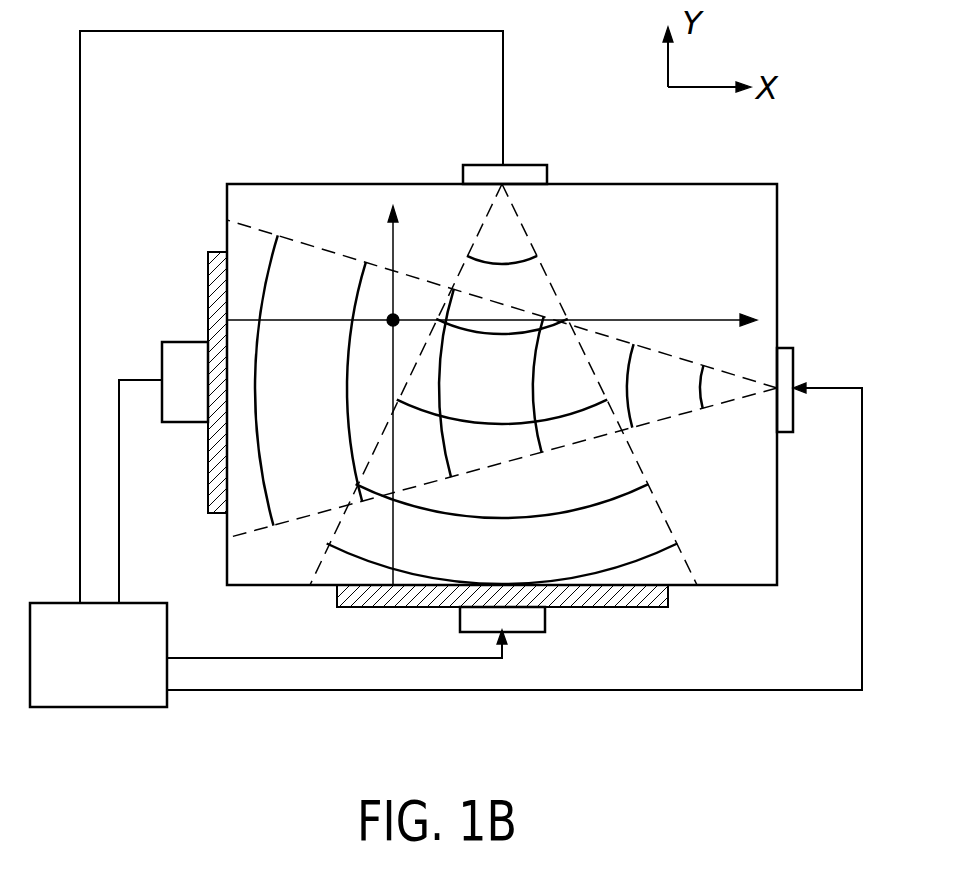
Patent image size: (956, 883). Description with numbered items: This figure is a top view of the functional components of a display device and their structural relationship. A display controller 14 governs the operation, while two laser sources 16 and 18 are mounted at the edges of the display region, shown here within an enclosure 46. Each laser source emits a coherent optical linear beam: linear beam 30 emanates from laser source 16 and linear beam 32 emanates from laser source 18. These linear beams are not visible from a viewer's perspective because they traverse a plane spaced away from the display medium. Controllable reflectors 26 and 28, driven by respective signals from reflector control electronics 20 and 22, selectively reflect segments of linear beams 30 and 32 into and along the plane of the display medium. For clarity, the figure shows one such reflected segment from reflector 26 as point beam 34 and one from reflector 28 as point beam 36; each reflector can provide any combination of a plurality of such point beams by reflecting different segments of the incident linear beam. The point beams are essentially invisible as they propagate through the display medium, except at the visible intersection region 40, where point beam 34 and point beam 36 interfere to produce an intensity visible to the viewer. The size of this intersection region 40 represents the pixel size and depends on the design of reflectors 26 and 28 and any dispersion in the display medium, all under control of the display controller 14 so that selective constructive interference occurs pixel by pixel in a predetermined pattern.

The display controller 14 is at (68, 656).
The laser source 16 is at (523, 165).
The laser source 18 is at (787, 348).
The reflector control electronics 20 is at (460, 624).
The reflector control electronics 22 is at (170, 399).
The controllable reflector 26 is at (603, 607).
The controllable reflector 28 is at (208, 291).
The linear beam 30 is at (676, 529).
The linear beam 32 is at (680, 426).
The point beam 34 is at (395, 540).
The point beam 36 is at (653, 322).
The visible intersection region 40 is at (395, 318).
The housing / tank 46 is at (620, 184).